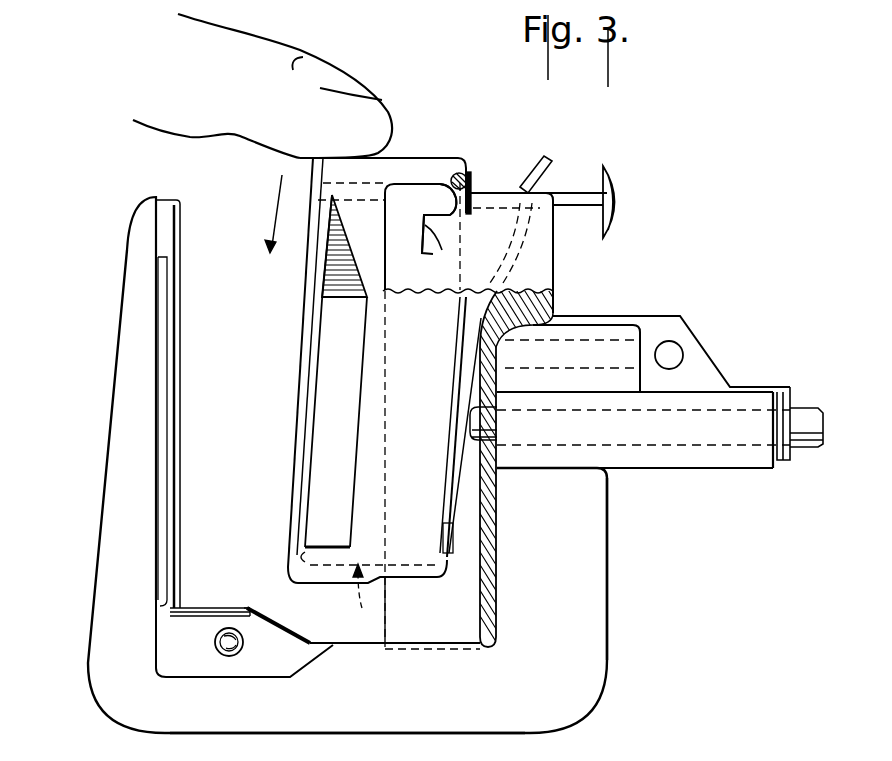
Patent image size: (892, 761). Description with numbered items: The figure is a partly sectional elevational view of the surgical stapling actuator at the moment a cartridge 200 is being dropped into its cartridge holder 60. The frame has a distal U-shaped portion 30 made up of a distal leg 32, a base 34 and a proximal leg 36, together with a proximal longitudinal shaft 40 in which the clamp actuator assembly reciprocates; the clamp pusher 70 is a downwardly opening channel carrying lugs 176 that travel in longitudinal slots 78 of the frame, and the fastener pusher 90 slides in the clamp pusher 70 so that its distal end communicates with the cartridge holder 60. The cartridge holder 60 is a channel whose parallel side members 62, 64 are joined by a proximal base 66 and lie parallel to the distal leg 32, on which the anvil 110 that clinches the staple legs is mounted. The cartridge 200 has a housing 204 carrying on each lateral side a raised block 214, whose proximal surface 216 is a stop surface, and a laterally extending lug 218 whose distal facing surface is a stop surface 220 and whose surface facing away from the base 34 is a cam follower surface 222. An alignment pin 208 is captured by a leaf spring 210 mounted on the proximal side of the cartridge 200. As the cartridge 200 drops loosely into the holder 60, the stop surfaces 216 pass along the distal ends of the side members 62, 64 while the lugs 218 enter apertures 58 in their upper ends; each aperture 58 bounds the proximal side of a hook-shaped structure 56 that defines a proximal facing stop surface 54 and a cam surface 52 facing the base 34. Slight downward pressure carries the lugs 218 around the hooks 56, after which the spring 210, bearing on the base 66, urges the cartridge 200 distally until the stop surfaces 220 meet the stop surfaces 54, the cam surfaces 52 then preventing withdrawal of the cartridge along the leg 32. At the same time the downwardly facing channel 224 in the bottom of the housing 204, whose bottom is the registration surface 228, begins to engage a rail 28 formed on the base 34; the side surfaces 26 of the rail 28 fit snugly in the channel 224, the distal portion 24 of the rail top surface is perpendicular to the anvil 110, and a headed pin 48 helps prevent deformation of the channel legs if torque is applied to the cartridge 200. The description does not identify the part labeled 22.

The cartridge 200 is at (442, 108).
The hook-shaped structure 56 is at (395, 190).
The stop surface 220 is at (452, 177).
The cam follower surface 222 is at (446, 186).
The laterally extending lug 218 is at (448, 182).
The aperture 58 is at (460, 231).
The leaf spring 210 is at (547, 162).
The alignment pin 208 is at (583, 197).
The cartridge holder 60 is at (566, 255).
The side member 62 is at (390, 247).
The cam surface 52 is at (460, 227).
The stop surface 54 is at (437, 249).
The proximal base 66 is at (545, 293).
The longitudinal slot 78 is at (608, 334).
The lug 176 is at (672, 354).
The clamp pusher 70 is at (790, 392).
The fastener pusher 90 is at (813, 412).
The anvil member 110 is at (181, 352).
The distal leg 32 is at (113, 412).
The raised block 214 is at (300, 412).
The proximal surface 216 is at (356, 473).
The longitudinal shaft portion 40 is at (720, 462).
The proximal leg 36 is at (595, 522).
The distal U-shaped portion 30 is at (112, 634).
The distal portion of rail top surface 24 is at (193, 609).
The rail 28 is at (250, 630).
The spring bar 22 is at (270, 622).
The side surface 26 is at (282, 637).
The registration surface 228 is at (335, 568).
The channel 224 is at (361, 598).
The cartridge housing 204 is at (418, 553).
The side member 64 is at (397, 628).
The headed pin 48 is at (230, 656).
The base 34 is at (340, 723).